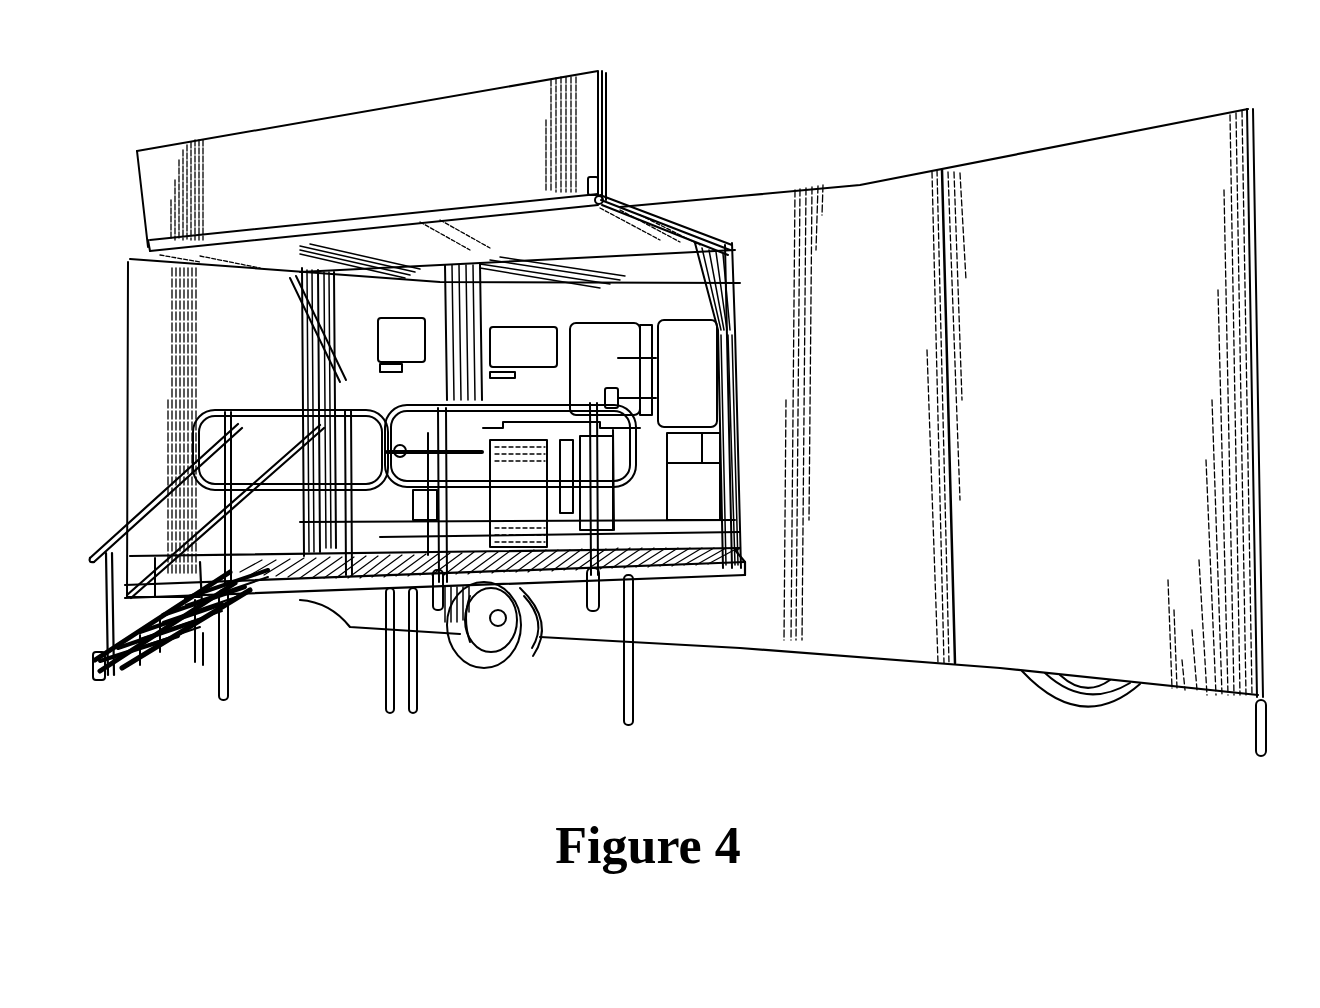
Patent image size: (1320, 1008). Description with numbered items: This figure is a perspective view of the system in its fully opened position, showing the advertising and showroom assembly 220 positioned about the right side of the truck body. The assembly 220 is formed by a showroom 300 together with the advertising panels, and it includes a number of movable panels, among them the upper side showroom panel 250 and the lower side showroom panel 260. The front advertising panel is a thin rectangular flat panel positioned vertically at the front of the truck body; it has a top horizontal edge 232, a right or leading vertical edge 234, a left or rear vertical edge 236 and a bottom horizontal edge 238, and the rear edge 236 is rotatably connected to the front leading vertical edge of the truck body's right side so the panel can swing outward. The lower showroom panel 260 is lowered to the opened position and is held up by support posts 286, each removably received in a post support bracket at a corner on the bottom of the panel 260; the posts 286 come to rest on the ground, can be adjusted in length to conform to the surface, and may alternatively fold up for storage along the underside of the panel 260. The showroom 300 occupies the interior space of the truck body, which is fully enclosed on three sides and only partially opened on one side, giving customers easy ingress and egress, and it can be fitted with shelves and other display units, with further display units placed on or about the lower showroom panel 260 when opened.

The advertising and showroom assembly 220 is at (98, 328).
The top horizontal edge 232 is at (1010, 155).
The right or leading vertical edge 234 is at (1252, 160).
The left or rear vertical edge 236 is at (951, 488).
The bottom horizontal edge 238 is at (998, 670).
The upper side showroom panel 250 is at (632, 198).
The lower side showroom panel 260 is at (664, 583).
The support post 286 is at (623, 683).
The showroom 300 is at (772, 327).